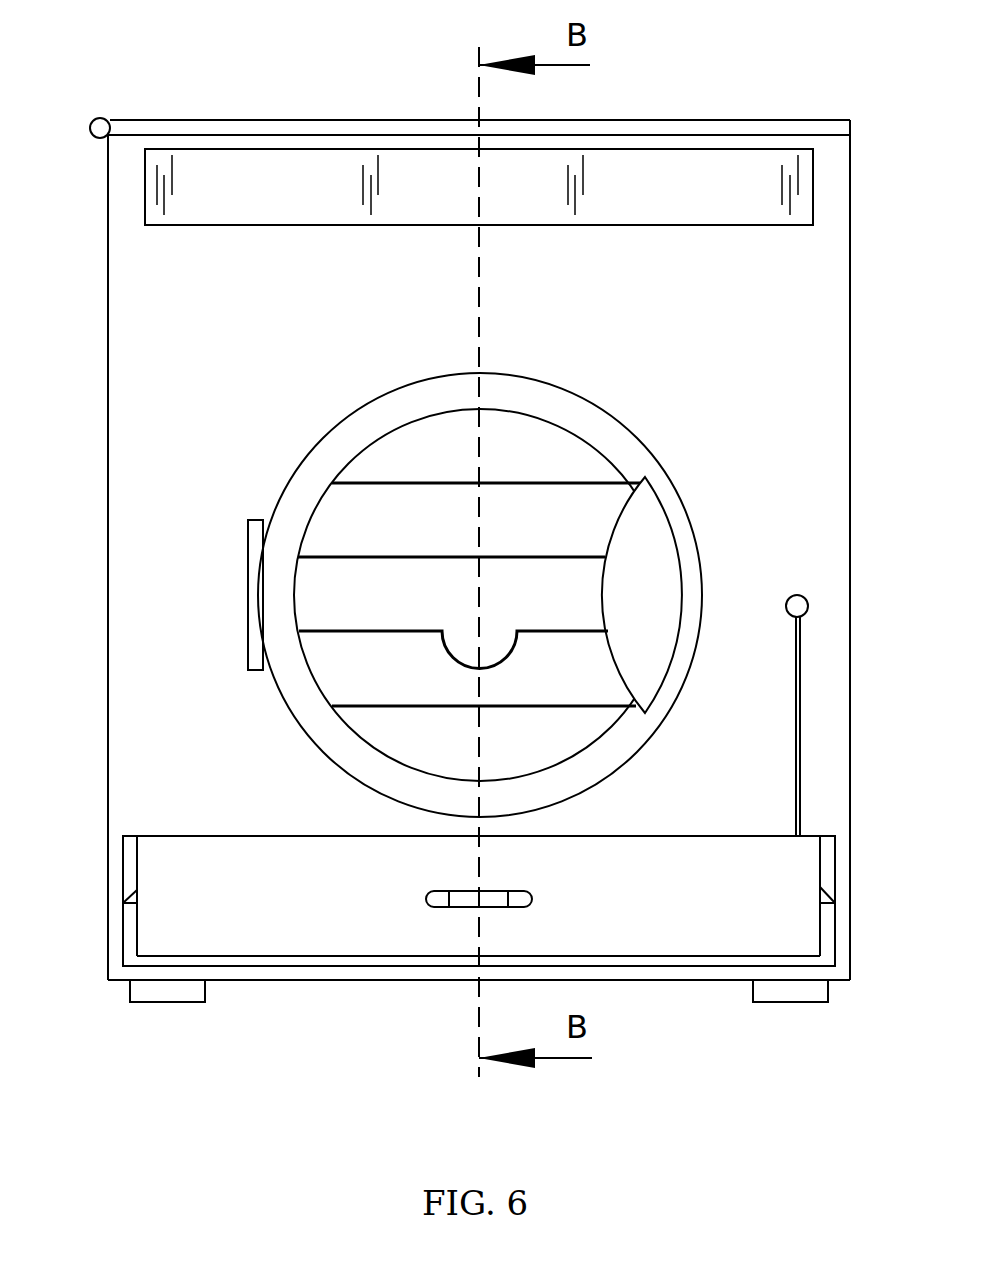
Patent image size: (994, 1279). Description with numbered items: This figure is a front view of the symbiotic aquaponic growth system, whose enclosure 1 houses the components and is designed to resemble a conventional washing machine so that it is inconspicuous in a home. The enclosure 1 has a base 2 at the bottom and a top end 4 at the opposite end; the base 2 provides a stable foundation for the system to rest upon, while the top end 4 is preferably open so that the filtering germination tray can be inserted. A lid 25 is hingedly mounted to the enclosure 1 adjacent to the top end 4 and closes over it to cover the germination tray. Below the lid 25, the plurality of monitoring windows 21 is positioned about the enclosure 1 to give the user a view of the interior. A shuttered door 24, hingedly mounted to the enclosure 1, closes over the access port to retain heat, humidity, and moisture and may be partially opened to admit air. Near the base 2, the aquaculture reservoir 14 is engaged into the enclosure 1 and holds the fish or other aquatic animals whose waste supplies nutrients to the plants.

The enclosure 1 is at (86, 456).
The base 2 is at (836, 982).
The top end 4 is at (852, 135).
The aquaculture reservoir 14 is at (232, 845).
The plurality of monitoring windows 21 is at (479, 187).
The shuttered door 24 is at (345, 428).
The lid 25 is at (318, 128).